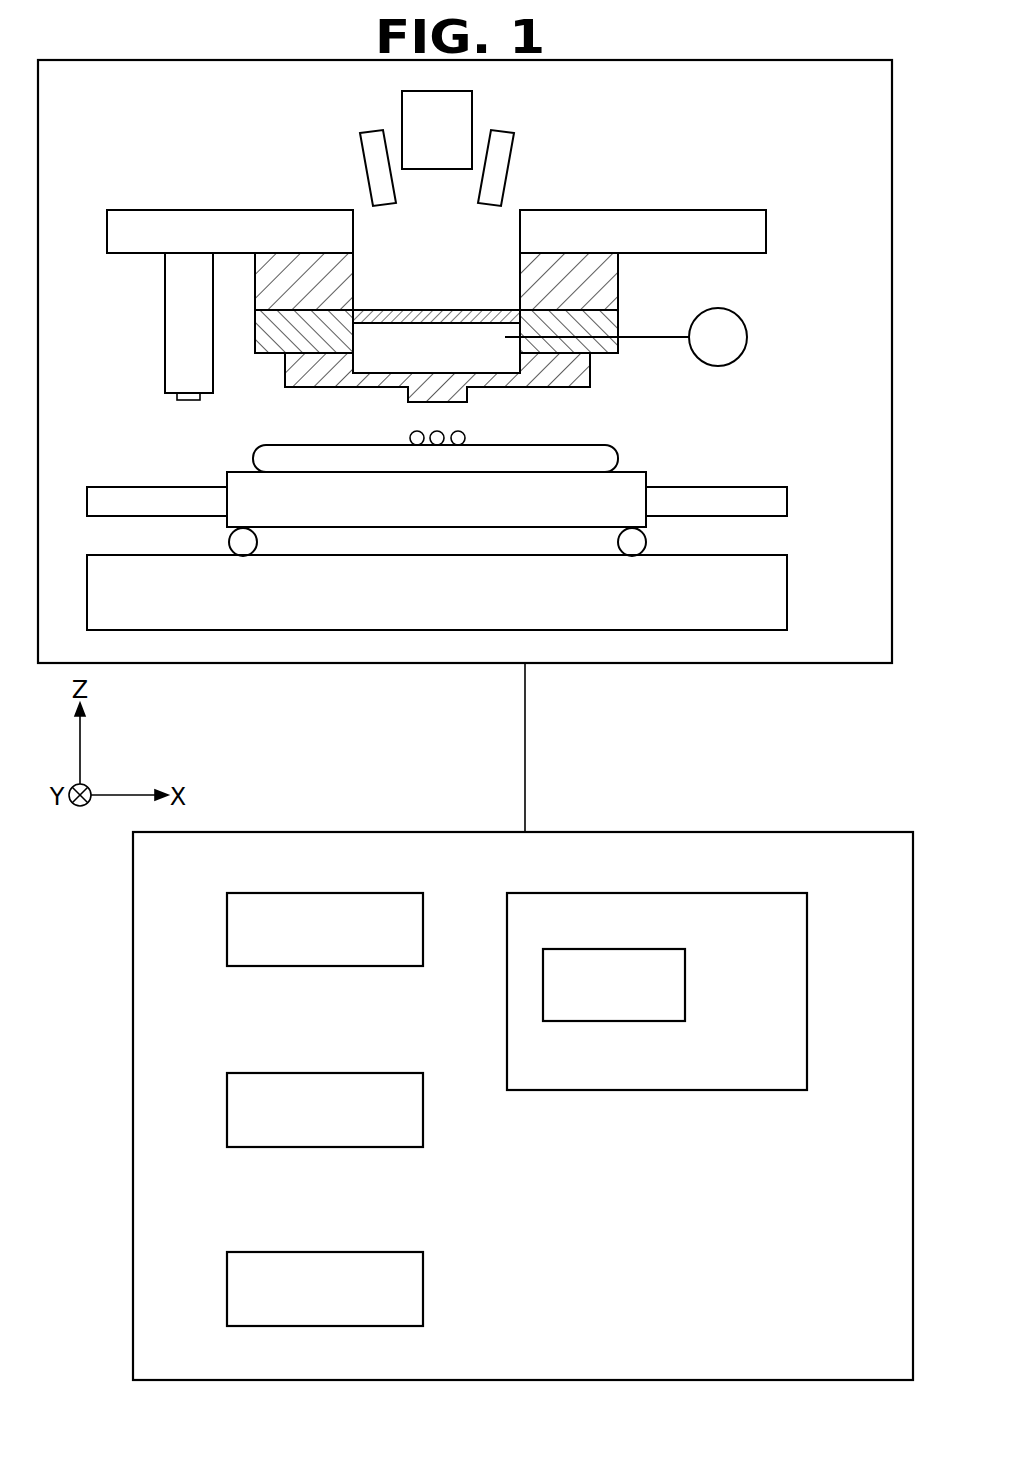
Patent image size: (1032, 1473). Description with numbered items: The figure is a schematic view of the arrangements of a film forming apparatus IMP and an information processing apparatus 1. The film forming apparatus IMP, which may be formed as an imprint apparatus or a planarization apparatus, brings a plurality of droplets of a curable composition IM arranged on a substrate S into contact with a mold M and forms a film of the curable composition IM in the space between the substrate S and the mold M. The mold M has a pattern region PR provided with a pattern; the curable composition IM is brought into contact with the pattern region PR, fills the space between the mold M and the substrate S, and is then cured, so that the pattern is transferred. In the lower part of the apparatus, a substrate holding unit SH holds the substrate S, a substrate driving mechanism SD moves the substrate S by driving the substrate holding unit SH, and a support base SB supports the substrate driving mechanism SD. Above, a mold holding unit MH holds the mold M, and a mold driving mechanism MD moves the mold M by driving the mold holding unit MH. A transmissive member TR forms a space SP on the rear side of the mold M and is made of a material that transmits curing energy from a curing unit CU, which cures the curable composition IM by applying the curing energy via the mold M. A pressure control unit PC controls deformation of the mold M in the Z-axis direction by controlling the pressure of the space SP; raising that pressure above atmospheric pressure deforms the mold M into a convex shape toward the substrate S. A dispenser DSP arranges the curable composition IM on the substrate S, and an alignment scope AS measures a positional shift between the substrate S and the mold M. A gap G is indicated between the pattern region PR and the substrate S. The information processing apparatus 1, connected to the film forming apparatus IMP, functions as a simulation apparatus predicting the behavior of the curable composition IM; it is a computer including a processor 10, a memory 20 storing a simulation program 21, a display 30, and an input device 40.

The film forming apparatus IMP is at (713, 60).
The curing unit CU is at (402, 97).
The alignment scope AS is at (362, 153).
The dispenser DSP is at (165, 365).
The mold holding unit MH is at (266, 355).
The mold driving mechanism MD is at (618, 268).
The transmissive member TR is at (407, 310).
The space SP is at (457, 362).
The mold M is at (338, 389).
The pattern region PR is at (445, 403).
The gap G is at (443, 418).
The pressure control unit PC is at (747, 337).
The curable composition IM is at (466, 440).
The substrate S is at (595, 445).
The substrate holding unit SH is at (638, 472).
The substrate driving mechanism SD is at (733, 487).
The support base SB is at (787, 590).
The information processing apparatus 1 is at (797, 832).
The processor 10 is at (227, 929).
The memory 20 is at (807, 945).
The simulation program 21 is at (685, 983).
The display 30 is at (227, 1109).
The input device 40 is at (227, 1289).